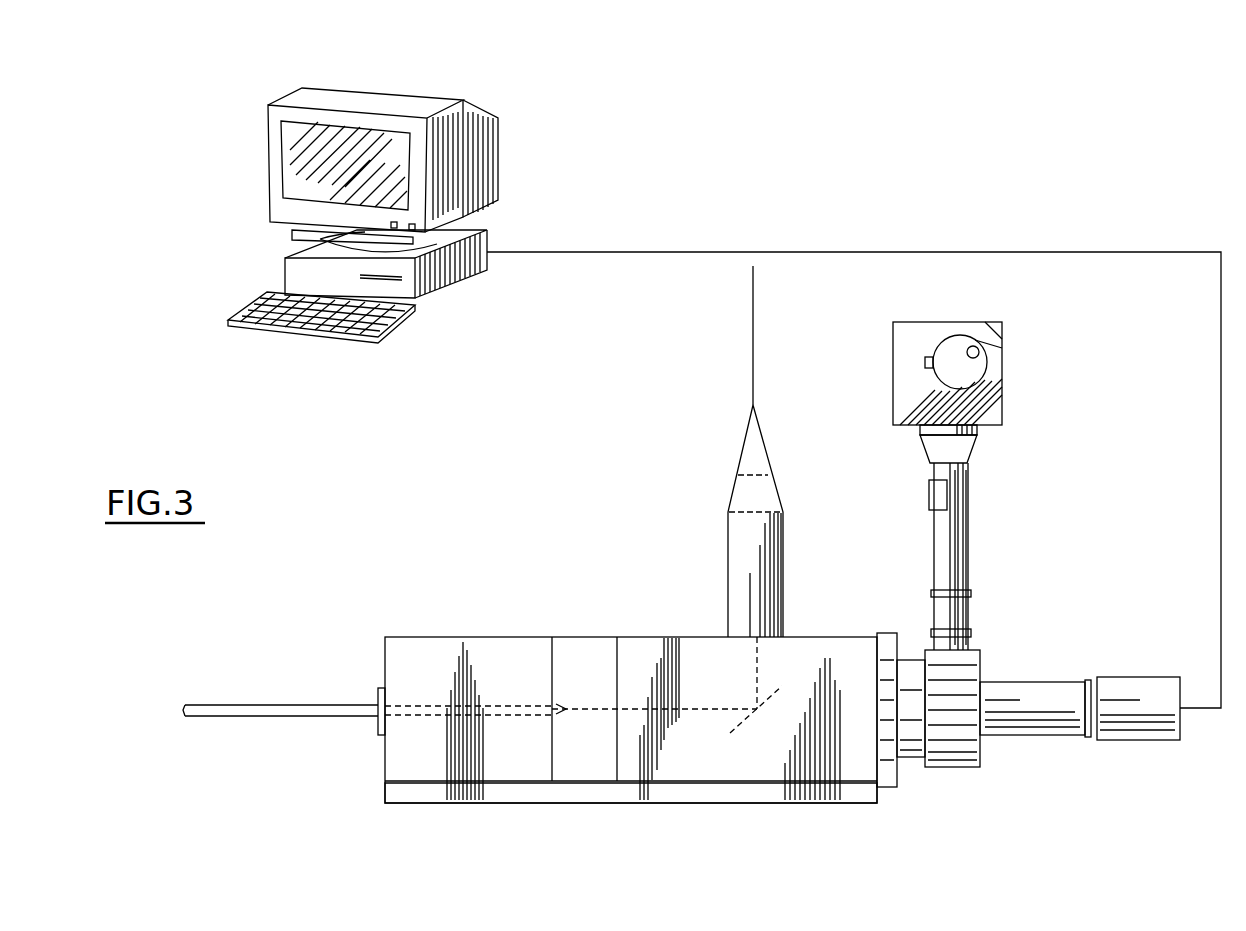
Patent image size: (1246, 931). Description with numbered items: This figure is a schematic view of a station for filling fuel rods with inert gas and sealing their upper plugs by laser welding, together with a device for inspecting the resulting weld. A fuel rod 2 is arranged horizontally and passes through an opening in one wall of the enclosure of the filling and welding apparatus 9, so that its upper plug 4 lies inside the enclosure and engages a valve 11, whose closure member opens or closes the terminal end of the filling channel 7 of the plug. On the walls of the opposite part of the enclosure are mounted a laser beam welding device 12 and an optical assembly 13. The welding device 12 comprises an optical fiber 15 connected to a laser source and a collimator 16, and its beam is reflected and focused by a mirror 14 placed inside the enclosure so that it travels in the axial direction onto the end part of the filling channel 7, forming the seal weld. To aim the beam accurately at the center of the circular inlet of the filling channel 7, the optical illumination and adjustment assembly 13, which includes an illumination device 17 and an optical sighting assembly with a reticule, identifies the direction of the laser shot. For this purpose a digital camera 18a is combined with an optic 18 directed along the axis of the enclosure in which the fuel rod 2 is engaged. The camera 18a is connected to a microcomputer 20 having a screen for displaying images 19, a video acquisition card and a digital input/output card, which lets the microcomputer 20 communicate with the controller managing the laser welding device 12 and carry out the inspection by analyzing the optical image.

The fuel rod 2 is at (228, 712).
The upper plug 4 is at (589, 656).
The filling channel 7 is at (559, 712).
The filling and welding apparatus 9 is at (466, 626).
The valve 11 is at (572, 768).
The laser beam welding device 12 is at (716, 522).
The optical assembly 13 is at (982, 768).
The mirror 14 is at (757, 709).
The optical fiber 15 is at (752, 380).
The collimator 16 is at (760, 588).
The illumination device 17 is at (960, 565).
The optic 18 is at (1018, 718).
The digital camera 18a is at (1128, 718).
The screen for displaying images 19 is at (315, 135).
The microcomputer 20 is at (452, 89).